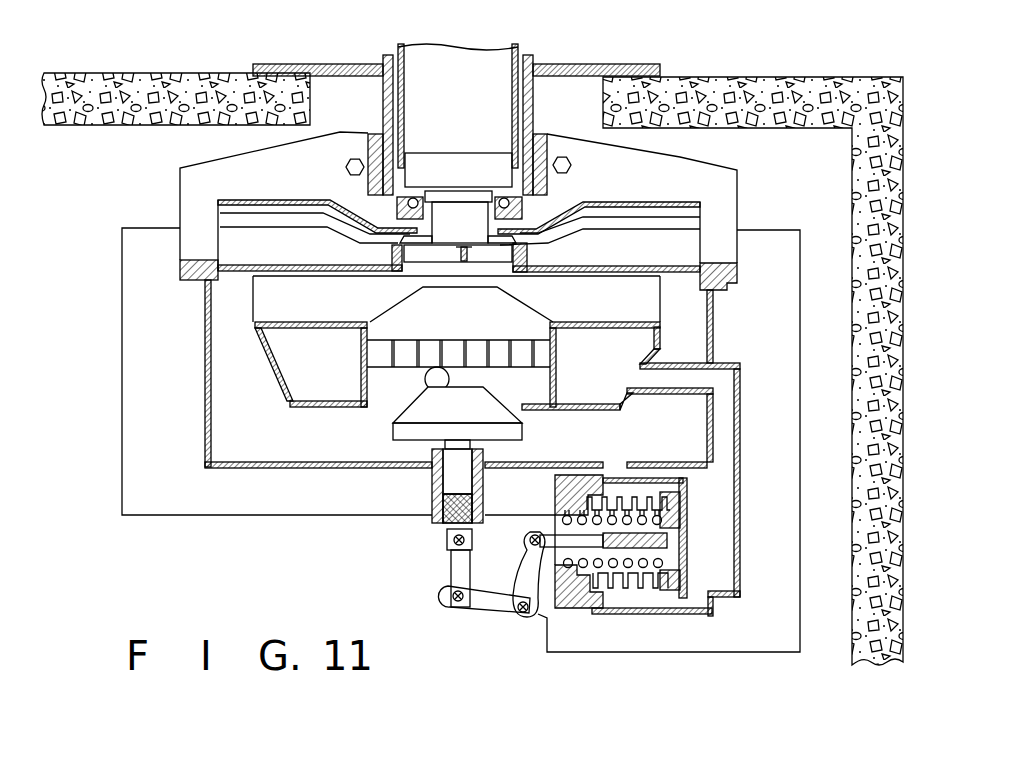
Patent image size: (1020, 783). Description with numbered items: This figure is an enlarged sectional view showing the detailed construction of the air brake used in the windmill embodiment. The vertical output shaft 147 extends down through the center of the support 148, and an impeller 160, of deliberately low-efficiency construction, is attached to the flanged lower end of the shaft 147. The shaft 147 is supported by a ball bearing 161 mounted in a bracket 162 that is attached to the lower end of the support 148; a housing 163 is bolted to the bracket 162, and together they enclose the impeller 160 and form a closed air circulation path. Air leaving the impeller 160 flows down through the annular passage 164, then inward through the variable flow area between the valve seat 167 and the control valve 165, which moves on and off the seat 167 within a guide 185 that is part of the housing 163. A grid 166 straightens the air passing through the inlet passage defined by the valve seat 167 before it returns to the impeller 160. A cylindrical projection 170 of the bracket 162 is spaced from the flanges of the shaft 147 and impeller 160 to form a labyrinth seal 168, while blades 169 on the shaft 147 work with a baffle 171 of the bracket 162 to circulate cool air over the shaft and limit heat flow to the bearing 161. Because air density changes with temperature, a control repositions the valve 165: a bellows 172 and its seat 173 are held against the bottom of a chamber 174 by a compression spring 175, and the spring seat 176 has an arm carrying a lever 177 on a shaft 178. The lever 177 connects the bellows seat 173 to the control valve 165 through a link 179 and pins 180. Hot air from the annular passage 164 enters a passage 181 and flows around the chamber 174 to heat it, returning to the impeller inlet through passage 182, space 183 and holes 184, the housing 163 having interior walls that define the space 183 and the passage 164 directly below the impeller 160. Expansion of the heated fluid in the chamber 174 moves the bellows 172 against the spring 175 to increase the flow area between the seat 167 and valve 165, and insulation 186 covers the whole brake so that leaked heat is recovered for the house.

The vertical output shaft 147 is at (517, 46).
The support 148 is at (520, 62).
The impeller 160 is at (372, 288).
The ball bearing 161 is at (430, 192).
The bracket 162 is at (180, 202).
The housing 163 is at (207, 343).
The annular passage 164 is at (232, 392).
The control valve 165 is at (395, 428).
The grid 166 is at (420, 337).
The valve seat 167 is at (395, 442).
The labyrinth seal 168 is at (222, 213).
The blades 169 is at (555, 216).
The cylindrical projection 170 is at (400, 253).
The baffle 171 is at (560, 212).
The bellows 172 is at (637, 580).
The bellows seat 173 is at (692, 615).
The chamber 174 is at (672, 592).
The compression spring 175 is at (527, 577).
The spring seat 176 is at (603, 617).
The lever 177 is at (483, 612).
The shaft 178 is at (538, 612).
The link 179 is at (445, 572).
The pins 180 is at (448, 593).
The passage 181 is at (618, 466).
The passage 182 is at (723, 481).
The space 183 is at (346, 352).
The holes 184 is at (550, 385).
The guide 185 is at (432, 521).
The insulation 186 is at (160, 496).